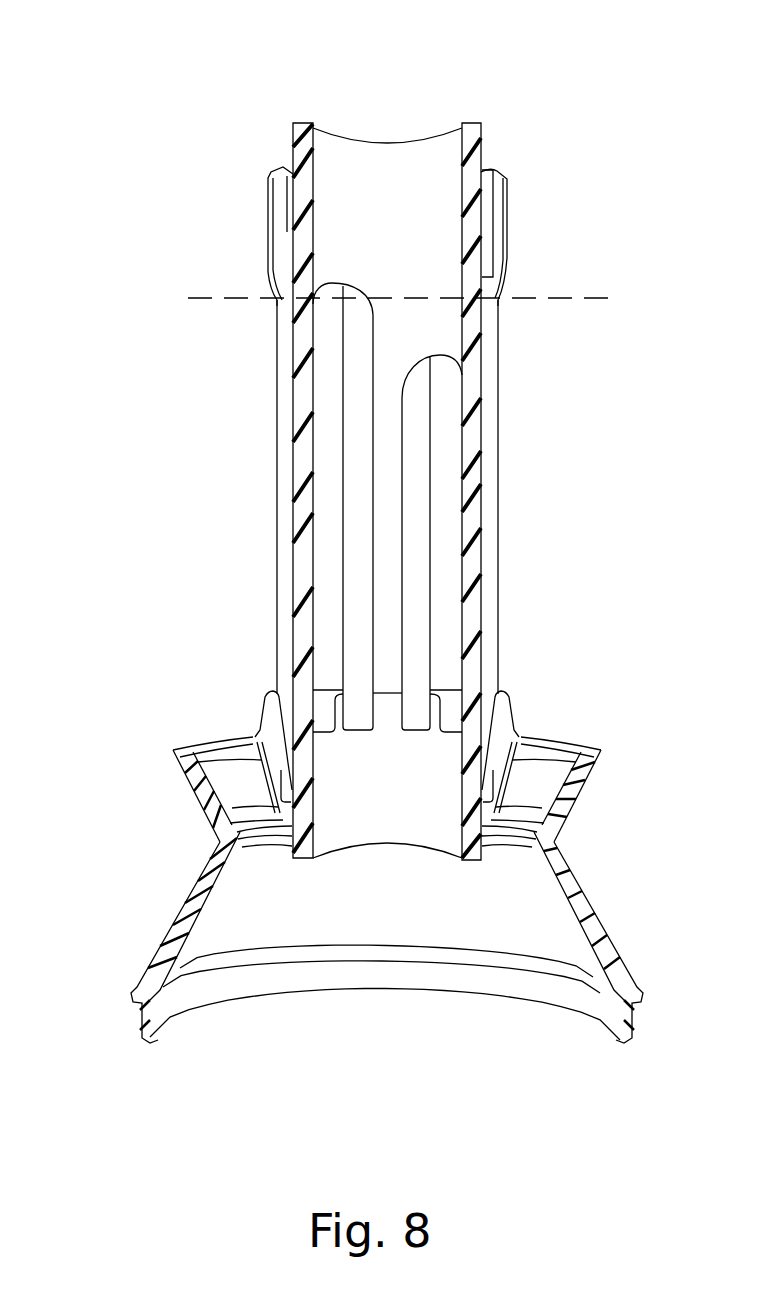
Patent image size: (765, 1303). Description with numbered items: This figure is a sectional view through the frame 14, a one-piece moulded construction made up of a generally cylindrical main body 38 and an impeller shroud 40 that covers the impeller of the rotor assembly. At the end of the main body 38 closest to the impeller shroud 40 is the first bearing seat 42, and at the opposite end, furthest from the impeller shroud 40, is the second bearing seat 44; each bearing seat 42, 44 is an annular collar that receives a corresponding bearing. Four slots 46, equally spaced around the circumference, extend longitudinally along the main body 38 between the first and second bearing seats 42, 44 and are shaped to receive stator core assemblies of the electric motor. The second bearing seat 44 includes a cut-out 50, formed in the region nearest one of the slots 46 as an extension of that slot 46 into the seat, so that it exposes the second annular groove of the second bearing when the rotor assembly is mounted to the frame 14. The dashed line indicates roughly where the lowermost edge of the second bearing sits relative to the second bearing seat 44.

The frame 14 is at (160, 101).
The cut-out 50 is at (336, 274).
The second bearing seat 44 is at (440, 257).
The slots 46 is at (335, 502).
The main body 38 is at (290, 612).
The first bearing seat 42 is at (425, 757).
The impeller shroud 40 is at (303, 983).